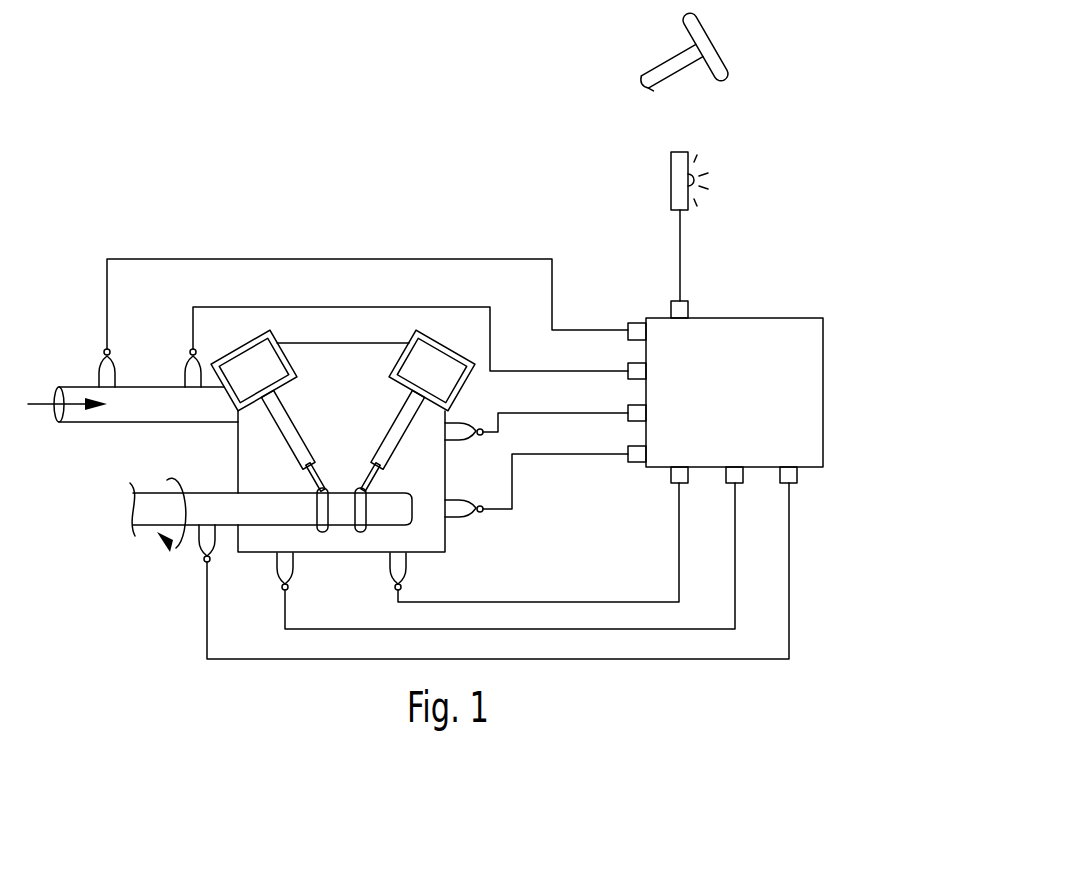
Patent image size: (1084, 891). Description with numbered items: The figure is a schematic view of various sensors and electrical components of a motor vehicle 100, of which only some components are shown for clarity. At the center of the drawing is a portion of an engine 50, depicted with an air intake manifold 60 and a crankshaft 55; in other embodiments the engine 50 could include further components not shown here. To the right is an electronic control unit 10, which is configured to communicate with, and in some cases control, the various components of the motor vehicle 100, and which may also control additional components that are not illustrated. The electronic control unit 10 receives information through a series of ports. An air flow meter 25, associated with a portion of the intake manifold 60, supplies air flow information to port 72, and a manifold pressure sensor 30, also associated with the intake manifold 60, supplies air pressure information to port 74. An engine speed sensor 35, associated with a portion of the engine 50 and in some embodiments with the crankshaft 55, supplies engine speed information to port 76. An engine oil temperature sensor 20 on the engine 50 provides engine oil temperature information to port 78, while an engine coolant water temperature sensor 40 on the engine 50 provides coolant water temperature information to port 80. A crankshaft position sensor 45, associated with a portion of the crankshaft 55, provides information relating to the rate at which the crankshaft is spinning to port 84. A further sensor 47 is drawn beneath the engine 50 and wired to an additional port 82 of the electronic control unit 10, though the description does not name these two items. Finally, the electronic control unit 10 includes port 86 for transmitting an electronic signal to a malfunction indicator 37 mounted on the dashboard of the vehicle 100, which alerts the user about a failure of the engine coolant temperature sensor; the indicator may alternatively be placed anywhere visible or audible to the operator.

The motor vehicle 100 is at (270, 200).
The electronic control unit 10 is at (780, 317).
The engine oil temperature sensor 20 is at (455, 500).
The air flow meter 25 is at (117, 377).
The manifold pressure sensor 30 is at (202, 367).
The engine speed sensor 35 is at (455, 418).
The malfunction indicator 37 is at (670, 178).
The engine coolant water temperature sensor 40 is at (410, 560).
The crankshaft position sensor 45 is at (202, 535).
The engine sensor 47 is at (276, 562).
The engine 50 is at (353, 427).
The crankshaft 55 is at (136, 527).
The air intake manifold 60 is at (82, 425).
The port 72 is at (641, 323).
The port 74 is at (627, 378).
The port 76 is at (627, 416).
The port 78 is at (627, 460).
The port 80 is at (670, 482).
The ECU input port 82 is at (741, 485).
The port 84 is at (798, 476).
The port 86 is at (689, 310).